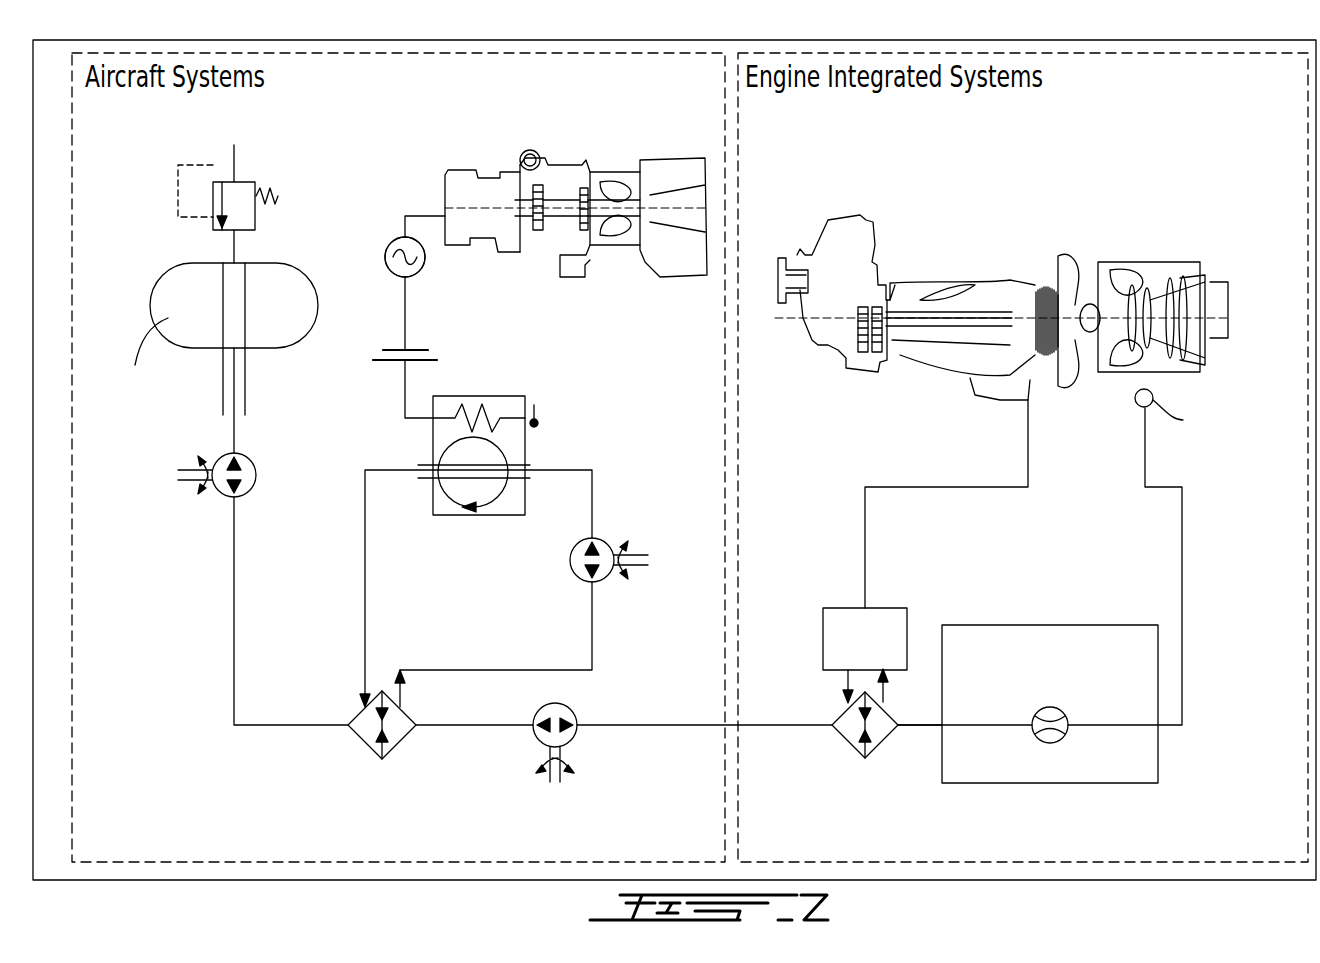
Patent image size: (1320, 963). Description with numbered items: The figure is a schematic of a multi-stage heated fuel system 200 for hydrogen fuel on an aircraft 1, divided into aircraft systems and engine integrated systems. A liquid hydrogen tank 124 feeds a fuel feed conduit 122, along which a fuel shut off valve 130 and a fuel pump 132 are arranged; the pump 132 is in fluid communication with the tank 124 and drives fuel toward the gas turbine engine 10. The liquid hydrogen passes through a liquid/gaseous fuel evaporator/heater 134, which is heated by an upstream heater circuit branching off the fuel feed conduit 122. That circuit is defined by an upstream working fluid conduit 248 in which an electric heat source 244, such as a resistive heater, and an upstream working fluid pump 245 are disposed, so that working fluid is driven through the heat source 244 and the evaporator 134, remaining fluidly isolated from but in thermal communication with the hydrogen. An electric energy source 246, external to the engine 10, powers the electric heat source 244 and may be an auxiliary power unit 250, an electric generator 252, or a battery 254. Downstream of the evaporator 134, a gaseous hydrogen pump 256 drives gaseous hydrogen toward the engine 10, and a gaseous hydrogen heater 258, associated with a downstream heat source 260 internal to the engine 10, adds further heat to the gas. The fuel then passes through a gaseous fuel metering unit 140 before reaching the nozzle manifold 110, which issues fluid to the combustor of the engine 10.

The aircraft 1 is at (100, 40).
The gas turbine engine 10 is at (1134, 186).
The nozzle manifold 110 is at (1134, 398).
The fuel feed conduit 122 is at (920, 723).
The liquid hydrogen tank 124 is at (168, 280).
The fuel shut off valve 130 is at (248, 182).
The fuel pump 132 is at (222, 495).
The liquid/gaseous fuel evaporator/heater 134 is at (355, 712).
The gaseous fuel metering unit 140 is at (1050, 744).
The multi-stage heated fuel system 200 is at (226, 744).
The electric heat source 244 is at (508, 396).
The upstream working fluid pump 245 is at (598, 548).
The electric energy source 246 is at (388, 234).
The upstream working fluid conduit 248 is at (365, 552).
The auxiliary power unit 250 is at (643, 150).
The electric generator 252 is at (418, 273).
The battery 254 is at (380, 342).
The gaseous hydrogen pump 256 is at (549, 706).
The gaseous hydrogen heater 258 is at (840, 712).
The downstream heat source 260 is at (837, 608).